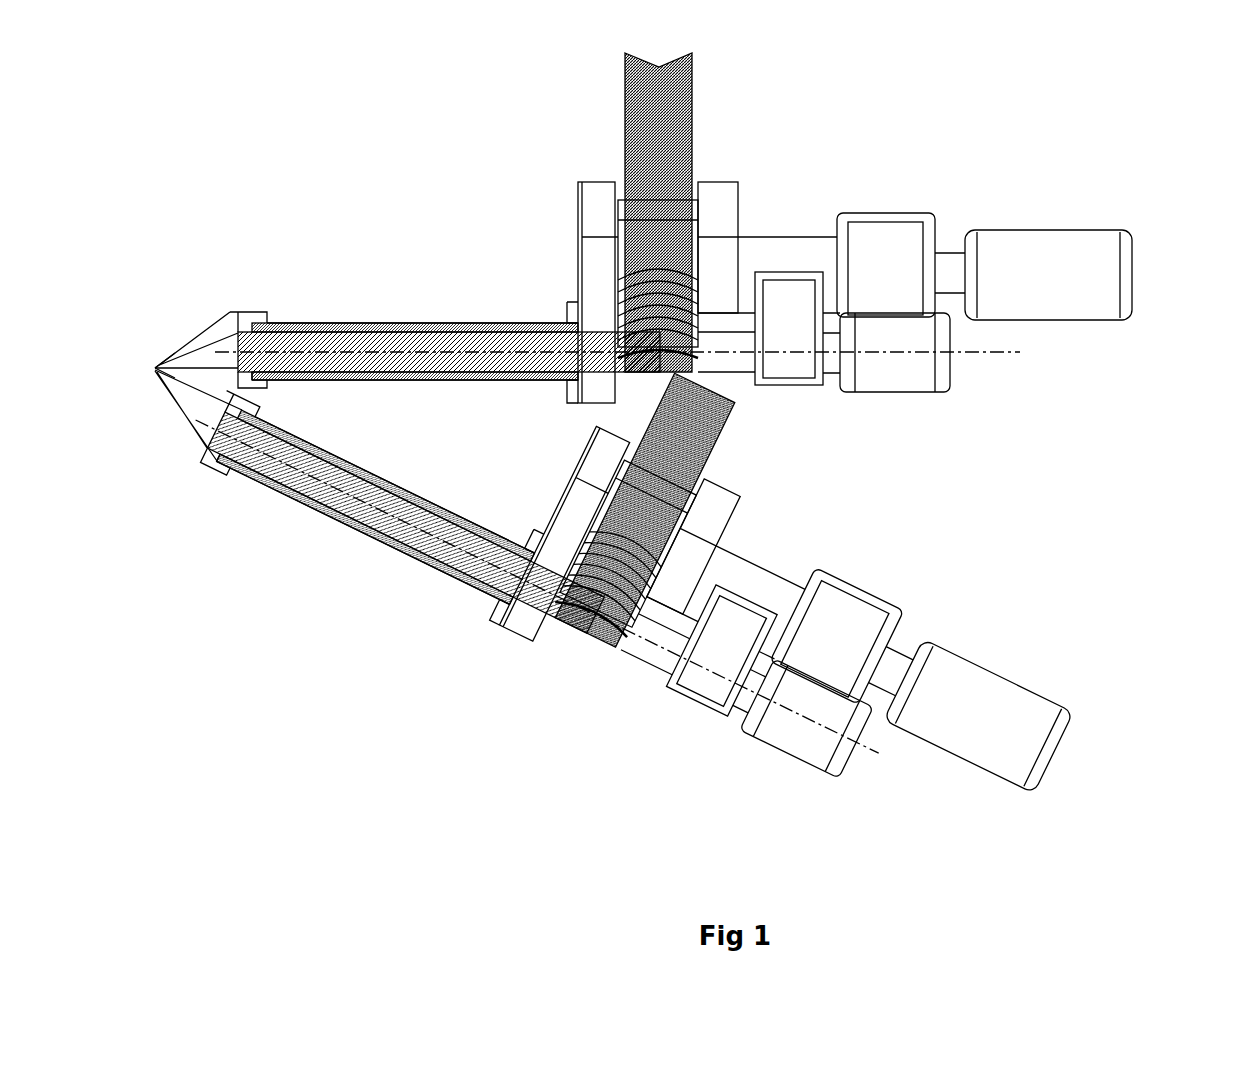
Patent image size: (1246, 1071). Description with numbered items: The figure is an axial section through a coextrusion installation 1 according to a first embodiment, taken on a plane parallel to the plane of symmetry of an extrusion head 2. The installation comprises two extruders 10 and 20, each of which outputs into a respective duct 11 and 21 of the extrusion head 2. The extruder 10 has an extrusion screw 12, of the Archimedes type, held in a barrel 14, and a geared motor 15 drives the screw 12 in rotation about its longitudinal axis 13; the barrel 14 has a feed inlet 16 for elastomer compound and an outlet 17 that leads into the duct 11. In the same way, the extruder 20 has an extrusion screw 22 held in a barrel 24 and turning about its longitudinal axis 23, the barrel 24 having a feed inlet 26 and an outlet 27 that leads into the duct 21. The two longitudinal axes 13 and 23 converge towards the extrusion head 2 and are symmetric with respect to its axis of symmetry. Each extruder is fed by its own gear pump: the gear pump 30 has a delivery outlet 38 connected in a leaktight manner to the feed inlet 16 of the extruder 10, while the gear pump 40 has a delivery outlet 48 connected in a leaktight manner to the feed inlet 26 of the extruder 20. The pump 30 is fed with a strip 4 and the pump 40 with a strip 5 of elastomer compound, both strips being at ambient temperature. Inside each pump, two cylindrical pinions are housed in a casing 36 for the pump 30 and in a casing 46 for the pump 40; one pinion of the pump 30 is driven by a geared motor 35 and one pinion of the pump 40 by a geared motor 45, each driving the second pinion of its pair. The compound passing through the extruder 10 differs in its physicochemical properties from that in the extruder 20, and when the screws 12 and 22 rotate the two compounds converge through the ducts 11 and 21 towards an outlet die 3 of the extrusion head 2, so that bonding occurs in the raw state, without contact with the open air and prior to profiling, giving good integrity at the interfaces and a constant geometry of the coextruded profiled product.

The coextrusion installation 1 is at (1105, 178).
The extrusion head 2 is at (185, 332).
The outlet die 3 is at (157, 360).
The strip 4 is at (693, 150).
The strip 5 is at (690, 460).
The extruder 10 is at (348, 298).
The duct 11 is at (207, 352).
The extrusion screw 12 is at (418, 335).
The longitudinal axis 13 is at (990, 352).
The barrel 14 is at (470, 323).
The geared motor 15 is at (932, 405).
The feed inlet 16 is at (625, 345).
The outlet 17 is at (247, 335).
The extruder 20 is at (322, 535).
The duct 21 is at (200, 410).
The extrusion screw 22 is at (432, 540).
The longitudinal axis 23 is at (880, 752).
The barrel 24 is at (450, 572).
The feed inlet 26 is at (560, 608).
The outlet 27 is at (220, 430).
The gear pump 30 is at (577, 170).
The geared motor 35 is at (950, 205).
The casing 36 is at (728, 192).
The delivery outlet 38 is at (650, 368).
The gear pump 40 is at (583, 672).
The geared motor 45 is at (932, 640).
The casing 46 is at (718, 520).
The delivery outlet 48 is at (640, 642).